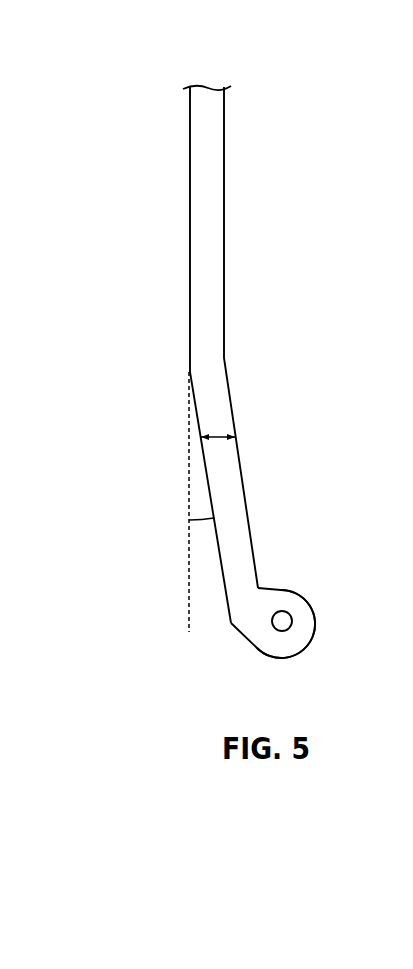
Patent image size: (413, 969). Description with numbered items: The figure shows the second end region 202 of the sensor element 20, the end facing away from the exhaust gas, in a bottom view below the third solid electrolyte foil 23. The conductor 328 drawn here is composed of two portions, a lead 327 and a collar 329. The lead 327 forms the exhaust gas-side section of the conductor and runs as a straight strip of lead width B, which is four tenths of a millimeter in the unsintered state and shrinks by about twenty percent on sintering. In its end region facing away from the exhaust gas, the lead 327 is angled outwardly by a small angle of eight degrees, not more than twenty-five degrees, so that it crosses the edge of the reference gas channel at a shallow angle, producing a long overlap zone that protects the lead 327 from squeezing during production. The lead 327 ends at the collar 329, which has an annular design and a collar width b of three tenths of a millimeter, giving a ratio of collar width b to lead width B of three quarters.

The conductor 328 is at (272, 354).
The lead 327 is at (212, 283).
The sensor element 20 is at (321, 579).
The third solid electrolyte foil 23 is at (321, 579).
The second end region 202 is at (321, 579).
The collar 329 is at (312, 632).
The collar width b is at (289, 614).
The lead width B is at (224, 436).